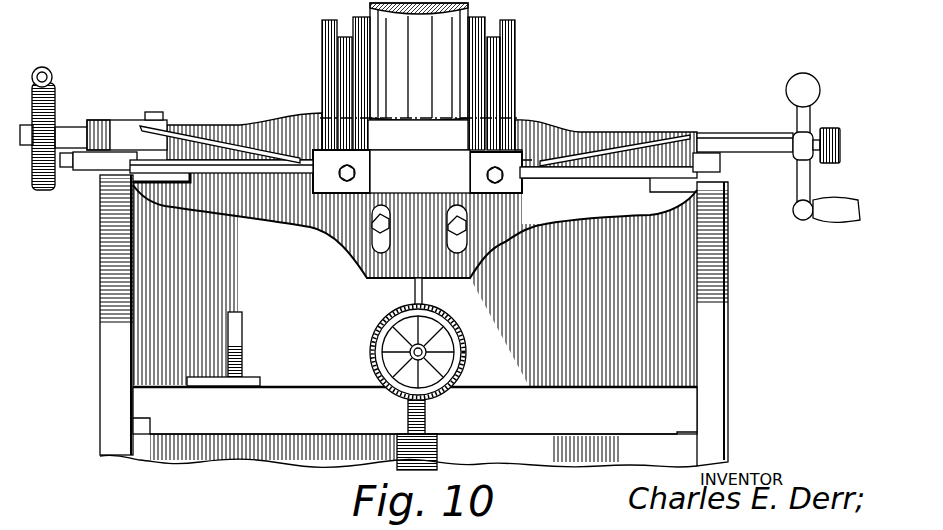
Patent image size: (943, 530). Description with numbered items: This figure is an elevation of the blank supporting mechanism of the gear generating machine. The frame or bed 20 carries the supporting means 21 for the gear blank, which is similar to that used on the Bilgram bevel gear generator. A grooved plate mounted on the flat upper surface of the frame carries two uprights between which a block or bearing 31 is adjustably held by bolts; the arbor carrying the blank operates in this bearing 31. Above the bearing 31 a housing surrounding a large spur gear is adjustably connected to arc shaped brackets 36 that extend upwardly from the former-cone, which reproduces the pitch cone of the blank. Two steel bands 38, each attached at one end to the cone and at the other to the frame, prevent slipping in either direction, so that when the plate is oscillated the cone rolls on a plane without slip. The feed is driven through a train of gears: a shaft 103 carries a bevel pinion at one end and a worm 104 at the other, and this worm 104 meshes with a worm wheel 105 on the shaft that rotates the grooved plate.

The frame or bed 20 is at (652, 432).
The supporting means 21 is at (453, 137).
The block or bearing 31 is at (390, 52).
The arc shaped brackets 36 is at (330, 88).
The steel bands 38 is at (190, 128).
The shaft 103 is at (50, 68).
The worm 104 is at (53, 97).
The worm wheel 105 is at (39, 190).